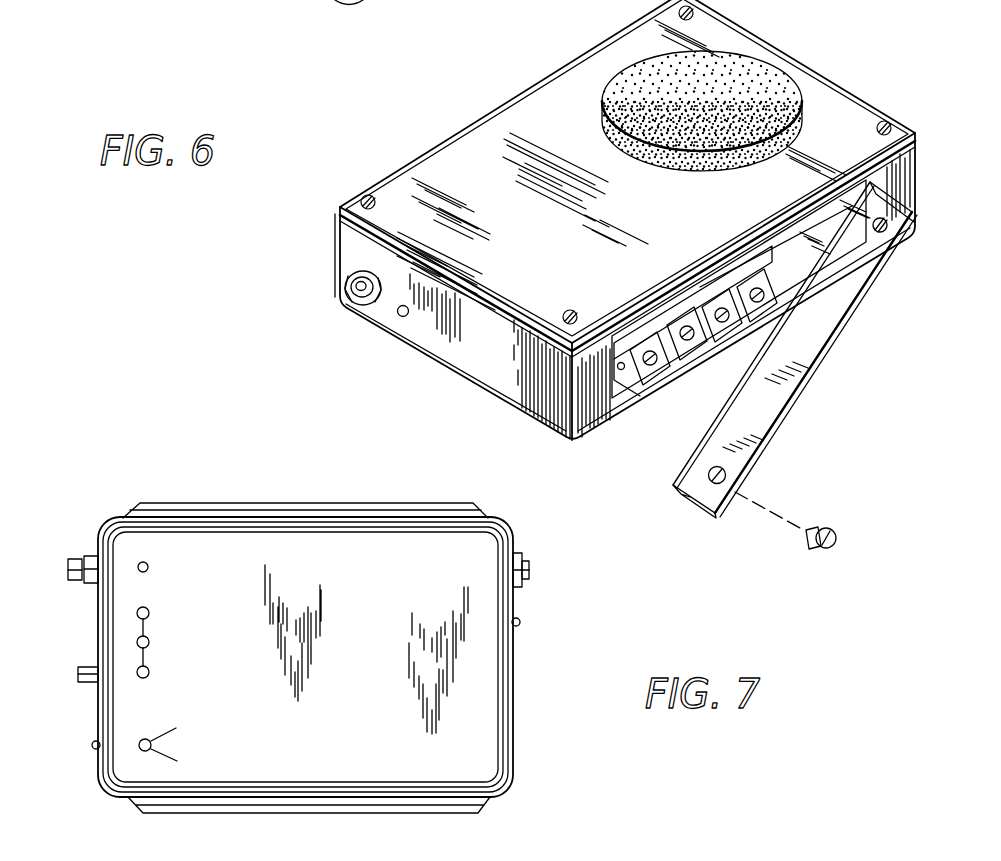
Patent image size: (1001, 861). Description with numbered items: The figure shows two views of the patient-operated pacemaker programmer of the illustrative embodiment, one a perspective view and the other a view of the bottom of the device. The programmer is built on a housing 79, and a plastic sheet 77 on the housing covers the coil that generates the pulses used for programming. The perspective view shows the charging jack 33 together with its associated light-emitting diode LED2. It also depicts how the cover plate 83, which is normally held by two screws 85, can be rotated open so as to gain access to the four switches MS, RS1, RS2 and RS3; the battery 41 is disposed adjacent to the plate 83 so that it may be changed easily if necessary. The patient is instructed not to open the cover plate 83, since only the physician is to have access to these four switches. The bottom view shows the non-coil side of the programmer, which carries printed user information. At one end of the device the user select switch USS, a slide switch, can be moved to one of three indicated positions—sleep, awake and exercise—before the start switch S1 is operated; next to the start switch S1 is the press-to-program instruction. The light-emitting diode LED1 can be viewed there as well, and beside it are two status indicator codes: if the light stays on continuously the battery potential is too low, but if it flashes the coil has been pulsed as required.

In FIG. 6, the plastic sheet 77 is at (634, 74).
In FIG. 6, the housing 79 is at (332, 253).
In FIG. 7, the housing 79 is at (282, 490).
In FIG. 6, the charging jack 33 is at (353, 300).
In FIG. 7, the charging jack 33 is at (531, 569).
In FIG. 6, the light-emitting diode LED2 is at (400, 316).
In FIG. 7, the light-emitting diode LED2 is at (521, 622).
In FIG. 6, the battery 41 is at (805, 252).
In FIG. 6, the switch MS is at (686, 324).
In FIG. 6, the switch RS1 is at (673, 312).
In FIG. 6, the switch RS2 is at (713, 290).
In FIG. 6, the switch RS3 is at (758, 287).
In FIG. 6, the cover plate 83 is at (801, 392).
In FIG. 6, the screws 85 is at (887, 233).
In FIG. 7, the start switch S1 is at (68, 568).
In FIG. 7, the user select switch USS is at (88, 683).
In FIG. 7, the light-emitting diode LED1 is at (95, 750).